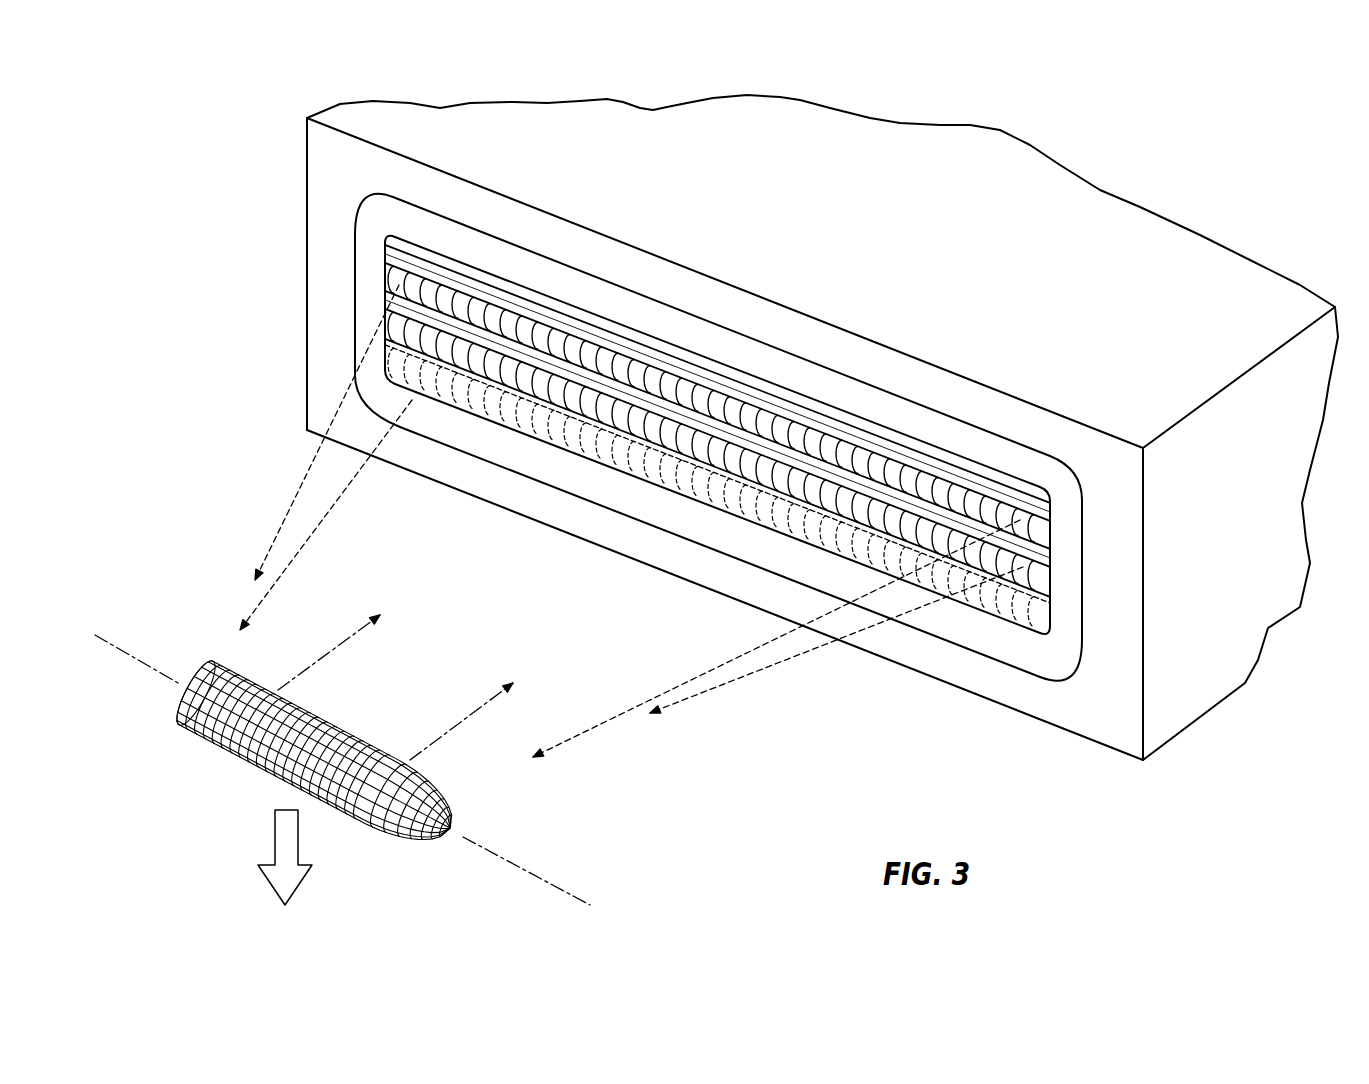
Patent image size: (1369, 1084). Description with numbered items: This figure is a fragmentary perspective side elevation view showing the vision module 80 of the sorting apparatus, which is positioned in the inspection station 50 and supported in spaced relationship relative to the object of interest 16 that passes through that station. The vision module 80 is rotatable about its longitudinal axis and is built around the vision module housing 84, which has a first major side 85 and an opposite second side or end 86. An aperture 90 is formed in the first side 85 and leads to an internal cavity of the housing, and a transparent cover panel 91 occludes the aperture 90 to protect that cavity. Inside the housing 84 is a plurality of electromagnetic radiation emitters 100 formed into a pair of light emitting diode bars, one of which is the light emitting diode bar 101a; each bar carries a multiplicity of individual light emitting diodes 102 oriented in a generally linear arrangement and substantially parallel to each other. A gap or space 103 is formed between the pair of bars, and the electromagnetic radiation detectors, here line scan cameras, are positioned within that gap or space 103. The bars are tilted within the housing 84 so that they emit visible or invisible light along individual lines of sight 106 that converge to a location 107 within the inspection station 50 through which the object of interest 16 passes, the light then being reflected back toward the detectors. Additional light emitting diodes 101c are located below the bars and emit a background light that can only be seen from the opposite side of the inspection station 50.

The inspection station 50 is at (712, 500).
The object of interest 16 is at (328, 720).
The vision module 80 is at (783, 427).
The vision module housing 84 is at (767, 197).
The first major side 85 is at (1123, 483).
The second side or end 86 is at (1245, 262).
The aperture 90 is at (992, 477).
The transparent cover panel 91 is at (483, 288).
The electromagnetic radiation emitters 100 is at (789, 412).
The light emitting diode bar 101a is at (674, 380).
The light emitting diodes 101c is at (987, 607).
The light emitting diodes 102 is at (620, 368).
The gap or space 103 is at (929, 505).
The lines of sight 106 is at (333, 503).
The location 107 is at (107, 635).